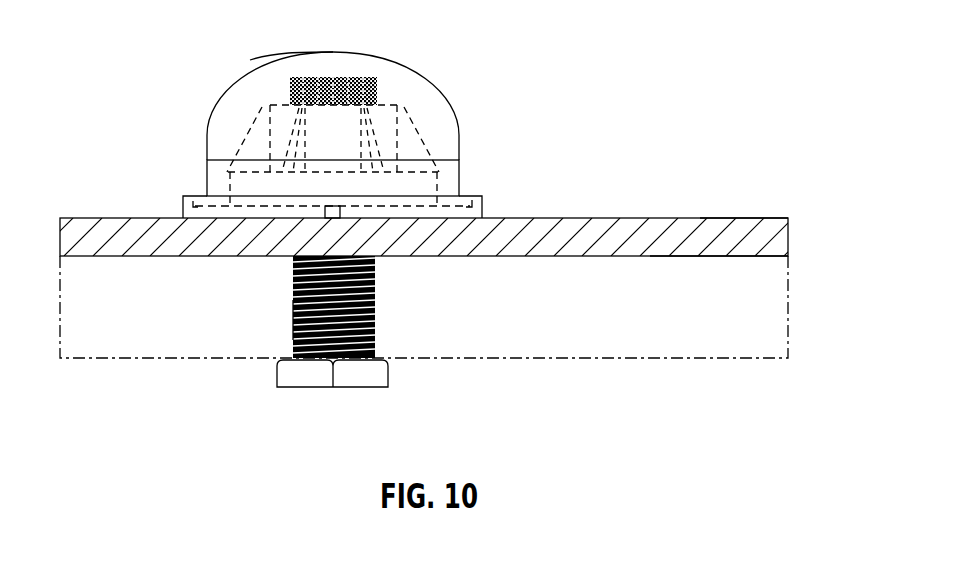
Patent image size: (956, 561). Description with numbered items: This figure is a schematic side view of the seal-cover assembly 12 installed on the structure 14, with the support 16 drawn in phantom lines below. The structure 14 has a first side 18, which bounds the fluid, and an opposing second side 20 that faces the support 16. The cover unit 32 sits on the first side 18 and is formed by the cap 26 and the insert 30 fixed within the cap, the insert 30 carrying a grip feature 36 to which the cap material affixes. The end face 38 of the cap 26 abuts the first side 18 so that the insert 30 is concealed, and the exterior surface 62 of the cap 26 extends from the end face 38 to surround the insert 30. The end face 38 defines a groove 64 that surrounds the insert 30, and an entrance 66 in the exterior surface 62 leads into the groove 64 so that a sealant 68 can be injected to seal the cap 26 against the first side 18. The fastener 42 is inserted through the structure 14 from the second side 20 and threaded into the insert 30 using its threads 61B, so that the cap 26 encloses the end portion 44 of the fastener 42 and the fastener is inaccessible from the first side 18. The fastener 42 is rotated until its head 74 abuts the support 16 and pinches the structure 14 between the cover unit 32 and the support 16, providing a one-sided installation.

The seal-cover assembly 12 is at (590, 90).
The structure 14 is at (790, 240).
The support 16 is at (760, 362).
The first side 18 is at (745, 218).
The second side 20 is at (712, 257).
The cap 26 is at (432, 111).
The insert 30 is at (464, 156).
The cover unit 32 is at (171, 139).
The grip feature 36 is at (257, 124).
The end face 38 is at (222, 218).
The fastener 42 is at (373, 318).
The end portion 44 is at (384, 88).
The threads 61B is at (292, 317).
The exterior surface 62 is at (268, 63).
The groove 64 is at (473, 192).
The entrance 66 is at (333, 206).
The sealant 68 is at (334, 220).
The head 74 is at (378, 378).